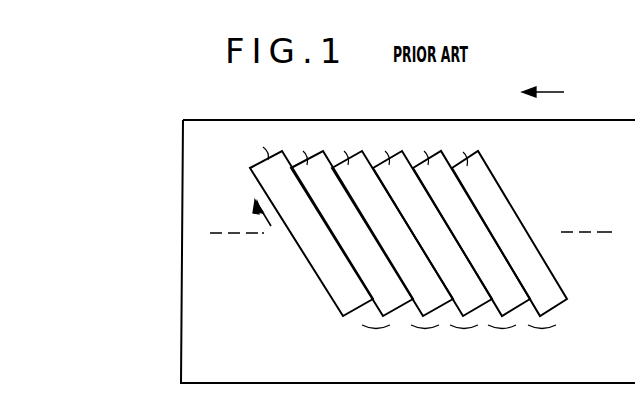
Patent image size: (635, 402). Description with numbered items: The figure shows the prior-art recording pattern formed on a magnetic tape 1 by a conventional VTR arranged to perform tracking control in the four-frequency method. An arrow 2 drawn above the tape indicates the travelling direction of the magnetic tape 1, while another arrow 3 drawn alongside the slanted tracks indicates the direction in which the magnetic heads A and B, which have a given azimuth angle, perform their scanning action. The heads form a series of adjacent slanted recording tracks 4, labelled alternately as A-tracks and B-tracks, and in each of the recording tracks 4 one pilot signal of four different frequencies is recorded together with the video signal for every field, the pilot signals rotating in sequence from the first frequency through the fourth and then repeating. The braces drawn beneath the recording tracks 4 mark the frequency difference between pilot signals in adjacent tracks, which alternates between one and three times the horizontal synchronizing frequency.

The magnetic tape 1 is at (622, 122).
The arrow indicating travelling direction 2 is at (555, 92).
The arrow indicating head scanning direction 3 is at (271, 226).
The recording tracks 4 is at (504, 172).